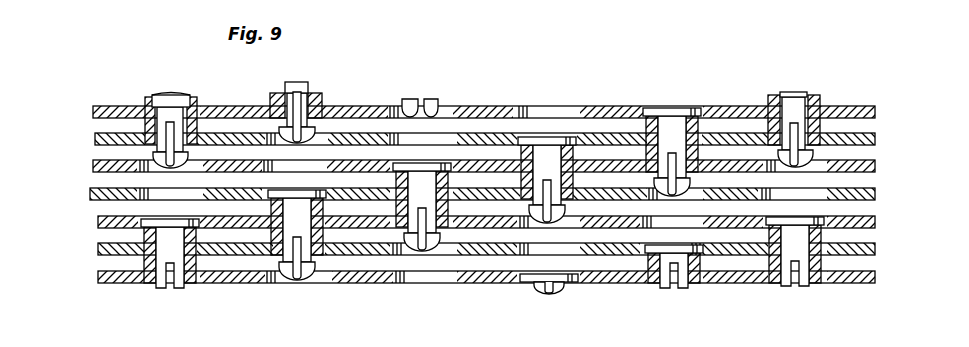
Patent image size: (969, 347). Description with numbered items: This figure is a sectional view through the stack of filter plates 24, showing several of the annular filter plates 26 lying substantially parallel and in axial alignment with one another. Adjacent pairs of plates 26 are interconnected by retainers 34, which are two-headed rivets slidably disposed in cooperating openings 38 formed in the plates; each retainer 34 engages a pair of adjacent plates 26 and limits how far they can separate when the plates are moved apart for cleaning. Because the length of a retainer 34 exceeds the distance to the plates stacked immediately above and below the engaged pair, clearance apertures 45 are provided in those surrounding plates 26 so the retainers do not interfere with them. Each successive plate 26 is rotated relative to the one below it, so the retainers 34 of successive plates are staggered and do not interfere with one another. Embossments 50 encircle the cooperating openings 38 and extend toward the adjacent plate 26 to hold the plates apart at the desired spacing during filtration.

The stack of filter plates 24 is at (596, 89).
The annular filter plate 26 is at (95, 140).
The retainer 34 is at (193, 103).
The cooperating opening 38 is at (163, 96).
The clearance aperture 45 is at (148, 168).
The embossment 50 is at (148, 108).